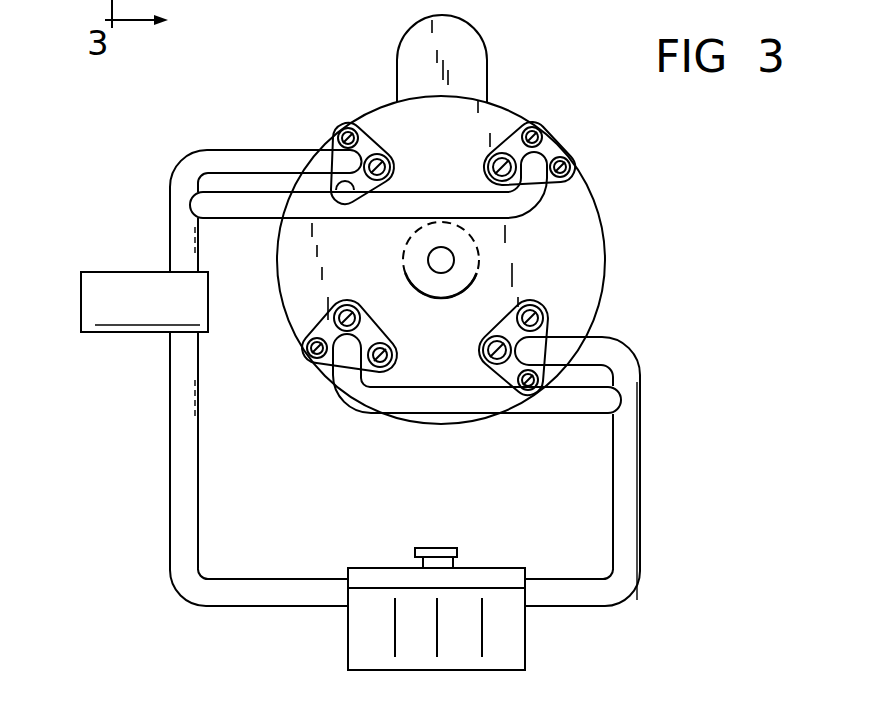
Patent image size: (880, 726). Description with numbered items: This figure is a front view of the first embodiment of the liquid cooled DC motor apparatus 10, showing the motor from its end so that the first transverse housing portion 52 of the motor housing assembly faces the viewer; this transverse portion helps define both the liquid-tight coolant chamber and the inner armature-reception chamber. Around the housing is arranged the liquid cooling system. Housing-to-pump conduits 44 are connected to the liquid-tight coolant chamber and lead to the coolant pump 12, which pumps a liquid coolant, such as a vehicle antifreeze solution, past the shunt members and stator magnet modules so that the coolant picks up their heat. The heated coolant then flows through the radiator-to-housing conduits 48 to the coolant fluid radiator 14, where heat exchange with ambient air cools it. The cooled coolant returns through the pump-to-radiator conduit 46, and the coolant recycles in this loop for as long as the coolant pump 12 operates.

The liquid cooled DC motor apparatus 10 is at (645, 170).
The coolant pump 12 is at (128, 302).
The coolant fluid radiator 14 is at (497, 635).
The housing-to-pump conduits 44 is at (297, 197).
The pump-to-radiator conduit 46 is at (185, 488).
The radiator-to-housing conduits 48 is at (570, 340).
The first transverse housing portion 52 is at (575, 254).